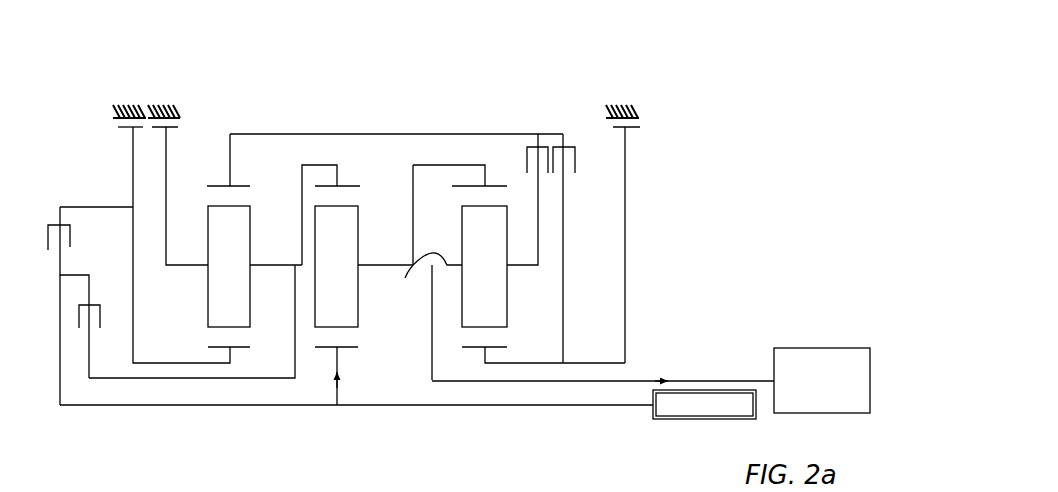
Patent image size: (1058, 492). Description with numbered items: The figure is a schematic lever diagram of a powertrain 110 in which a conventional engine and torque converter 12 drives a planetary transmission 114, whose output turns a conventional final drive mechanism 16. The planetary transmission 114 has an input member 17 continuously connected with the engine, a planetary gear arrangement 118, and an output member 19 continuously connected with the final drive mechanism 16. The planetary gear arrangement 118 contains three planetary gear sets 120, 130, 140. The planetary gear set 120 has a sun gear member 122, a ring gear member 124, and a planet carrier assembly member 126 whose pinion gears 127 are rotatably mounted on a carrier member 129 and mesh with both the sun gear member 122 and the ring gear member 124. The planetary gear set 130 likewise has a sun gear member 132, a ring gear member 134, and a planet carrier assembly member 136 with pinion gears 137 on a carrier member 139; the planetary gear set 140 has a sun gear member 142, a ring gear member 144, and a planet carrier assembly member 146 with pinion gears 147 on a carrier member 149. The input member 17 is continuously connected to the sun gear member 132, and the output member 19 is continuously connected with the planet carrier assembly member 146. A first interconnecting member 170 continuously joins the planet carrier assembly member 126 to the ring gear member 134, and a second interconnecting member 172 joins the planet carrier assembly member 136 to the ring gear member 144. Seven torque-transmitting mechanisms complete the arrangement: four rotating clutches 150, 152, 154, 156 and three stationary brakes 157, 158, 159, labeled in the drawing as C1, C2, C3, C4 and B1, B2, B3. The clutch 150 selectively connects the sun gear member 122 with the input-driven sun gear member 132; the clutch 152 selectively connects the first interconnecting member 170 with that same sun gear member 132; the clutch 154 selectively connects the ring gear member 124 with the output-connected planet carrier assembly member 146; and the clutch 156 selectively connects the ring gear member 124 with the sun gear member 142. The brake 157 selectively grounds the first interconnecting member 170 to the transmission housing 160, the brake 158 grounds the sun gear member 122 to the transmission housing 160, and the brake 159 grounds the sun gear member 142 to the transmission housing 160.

The engine and torque converter 12 is at (718, 420).
The final drive mechanism 16 is at (830, 348).
The input member 17 is at (565, 407).
The output member 19 is at (640, 380).
The powertrain 110 is at (487, 68).
The planetary transmission 114 is at (541, 74).
The planetary gear arrangement 118 is at (245, 78).
The planetary gear set 120 is at (224, 351).
The sun gear member 122 is at (236, 349).
The ring gear member 124 is at (213, 187).
The planet carrier assembly member 126 is at (254, 261).
The pinion gears 127 is at (230, 266).
The carrier member 129 is at (272, 268).
The planetary gear set 130 is at (333, 351).
The sun gear member 132 is at (348, 350).
The ring gear member 134 is at (340, 188).
The planet carrier assembly member 136 is at (364, 260).
The pinion gears 137 is at (337, 266).
The carrier member 139 is at (392, 266).
The planetary gear set 140 is at (484, 350).
The sun gear member 142 is at (490, 348).
The ring gear member 144 is at (478, 188).
The planet carrier assembly member 146 is at (459, 260).
The pinion gears 147 is at (484, 266).
The carrier member 149 is at (422, 316).
The clutch 150 is at (75, 265).
The clutch 152 is at (90, 355).
The clutch 154 is at (515, 189).
The clutch 156 is at (581, 248).
The brake 157 is at (186, 184).
The brake 158 is at (109, 142).
The brake 159 is at (654, 236).
The transmission housing 160 is at (180, 105).
The first interconnecting member 170 is at (325, 163).
The second interconnecting member 172 is at (473, 163).
The brake B1 is at (202, 150).
The brake B2 is at (116, 125).
The brake B3 is at (672, 157).
The clutch C1 is at (100, 246).
The clutch C2 is at (85, 332).
The clutch C3 is at (531, 177).
The clutch C4 is at (585, 217).